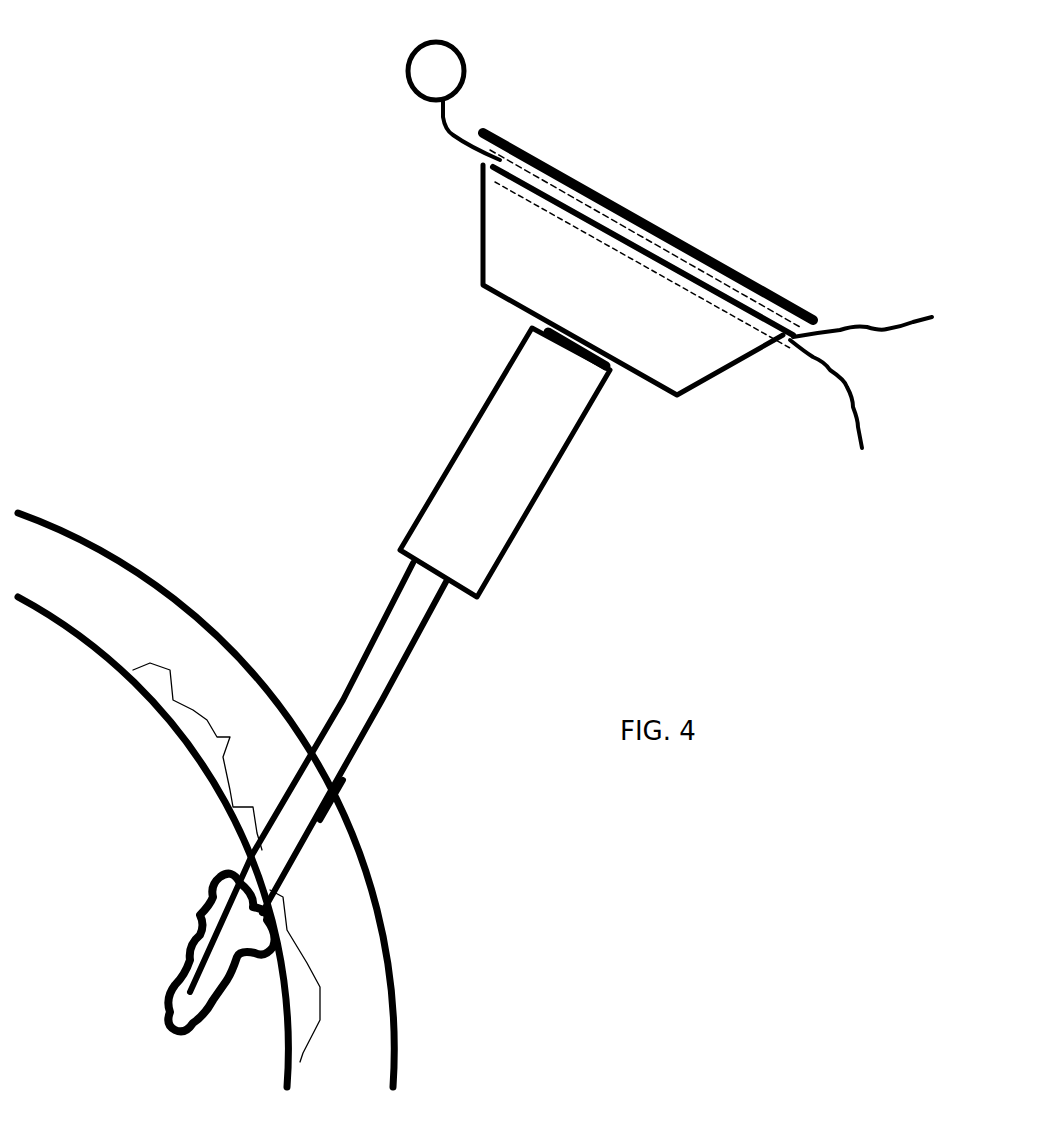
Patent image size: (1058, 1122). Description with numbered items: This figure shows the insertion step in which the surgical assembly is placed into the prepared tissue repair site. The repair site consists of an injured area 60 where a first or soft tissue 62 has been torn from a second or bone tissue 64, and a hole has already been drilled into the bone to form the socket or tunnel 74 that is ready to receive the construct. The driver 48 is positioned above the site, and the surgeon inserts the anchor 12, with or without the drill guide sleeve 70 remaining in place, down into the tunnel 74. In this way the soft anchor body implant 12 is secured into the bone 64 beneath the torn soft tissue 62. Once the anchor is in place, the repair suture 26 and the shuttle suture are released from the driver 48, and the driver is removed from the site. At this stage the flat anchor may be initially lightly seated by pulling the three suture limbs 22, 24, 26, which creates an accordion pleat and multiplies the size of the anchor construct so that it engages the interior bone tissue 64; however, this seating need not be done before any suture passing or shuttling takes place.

The anchor 12 is at (140, 989).
The suture limb 22 is at (460, 50).
The suture limb 24 is at (845, 390).
The repair suture 26 is at (853, 322).
The driver 48 is at (462, 320).
The injured area 60 is at (193, 720).
The soft tissue 62 is at (368, 1052).
The bone tissue 64 is at (77, 688).
The drill guide sleeve 70 is at (400, 683).
The tunnel 74 is at (333, 796).